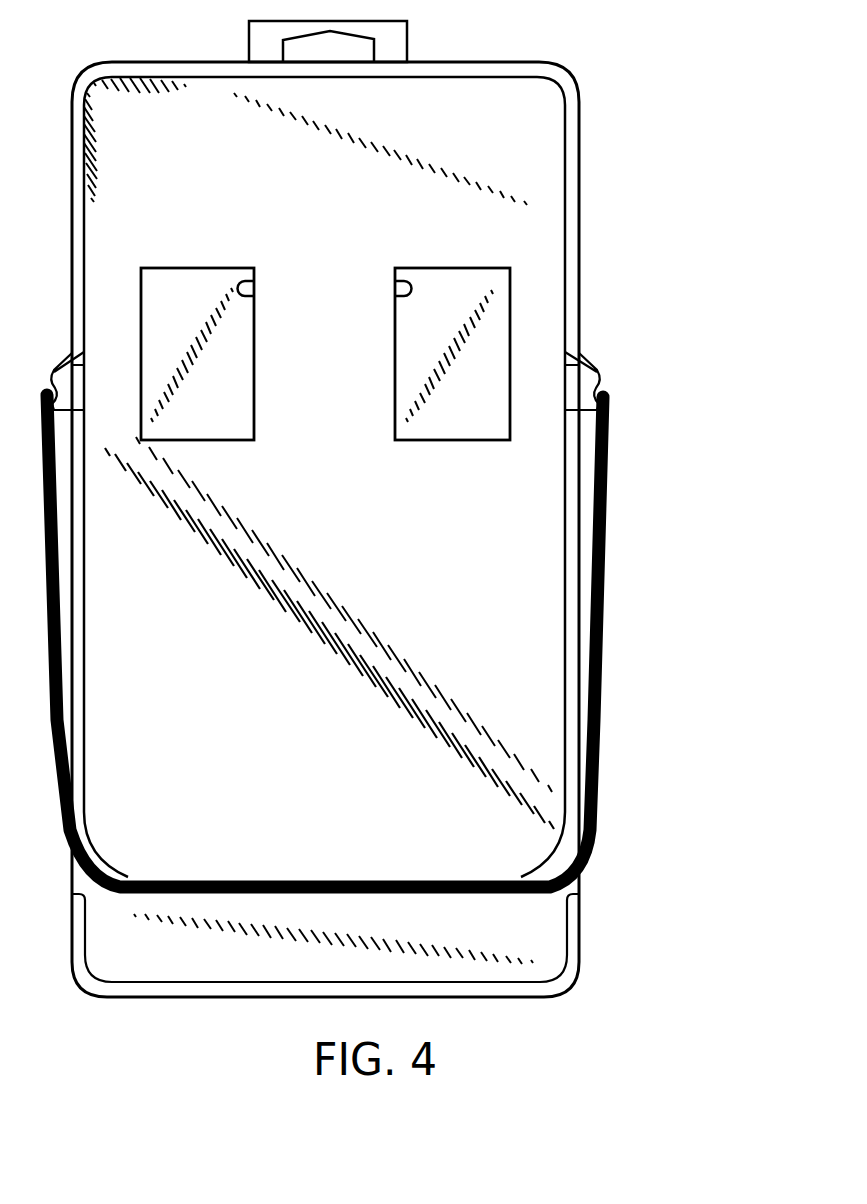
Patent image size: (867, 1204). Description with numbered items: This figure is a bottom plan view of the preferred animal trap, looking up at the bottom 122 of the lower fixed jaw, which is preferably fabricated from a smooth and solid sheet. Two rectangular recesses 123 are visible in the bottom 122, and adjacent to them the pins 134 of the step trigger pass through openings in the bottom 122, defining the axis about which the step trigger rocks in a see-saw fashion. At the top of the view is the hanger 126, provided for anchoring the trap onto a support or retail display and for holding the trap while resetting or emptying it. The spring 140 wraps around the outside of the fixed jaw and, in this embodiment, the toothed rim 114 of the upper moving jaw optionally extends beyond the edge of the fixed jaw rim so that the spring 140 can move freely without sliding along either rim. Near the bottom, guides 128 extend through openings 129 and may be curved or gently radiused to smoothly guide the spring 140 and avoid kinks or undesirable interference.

The toothed rim 114 is at (590, 375).
The bottom 122 is at (478, 641).
The recesses 123 is at (238, 431).
The hanger 126 is at (397, 39).
The guides 128 is at (557, 863).
The openings 129 is at (562, 888).
The pins 134 is at (395, 285).
The spring 140 is at (608, 714).